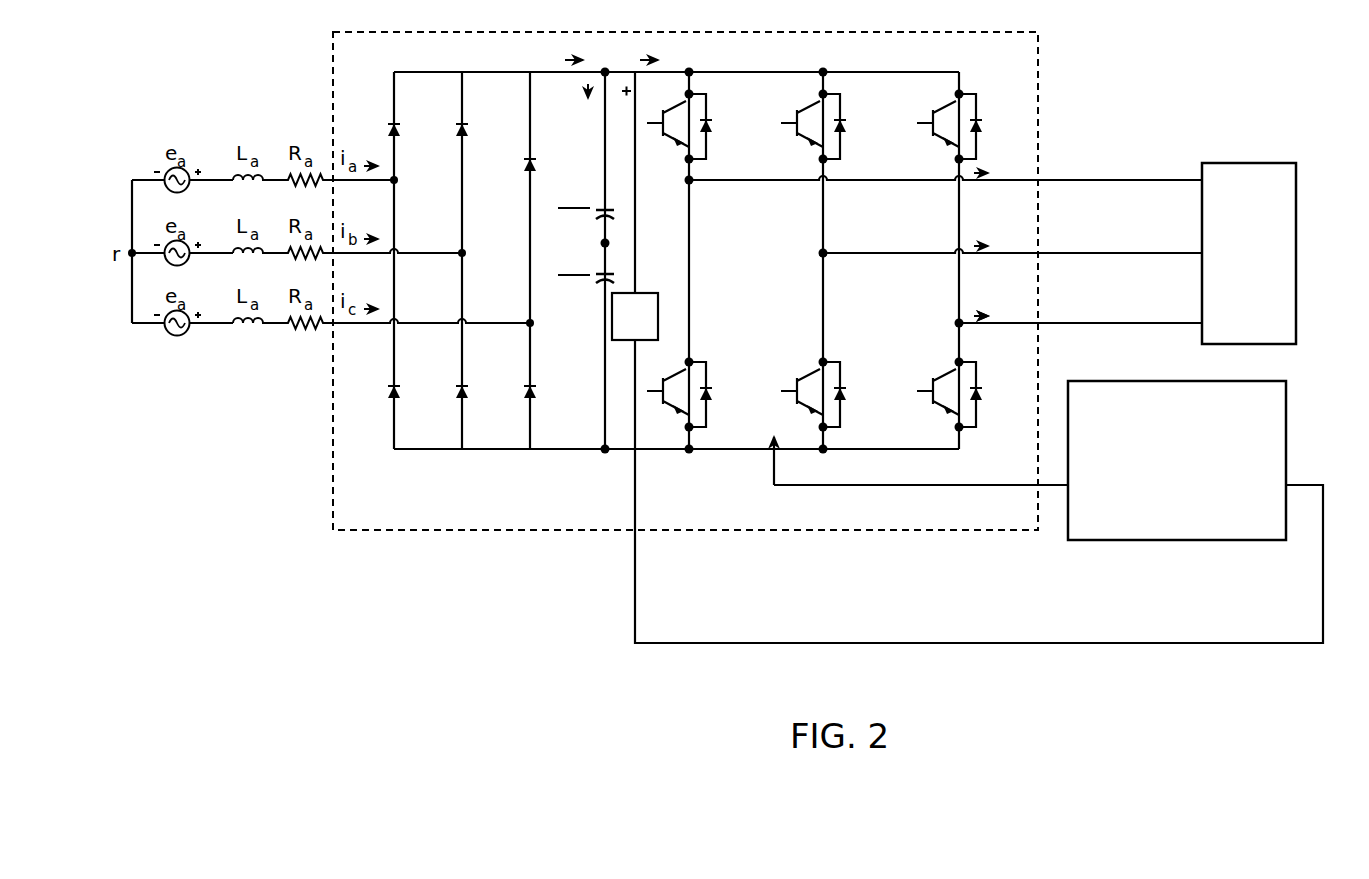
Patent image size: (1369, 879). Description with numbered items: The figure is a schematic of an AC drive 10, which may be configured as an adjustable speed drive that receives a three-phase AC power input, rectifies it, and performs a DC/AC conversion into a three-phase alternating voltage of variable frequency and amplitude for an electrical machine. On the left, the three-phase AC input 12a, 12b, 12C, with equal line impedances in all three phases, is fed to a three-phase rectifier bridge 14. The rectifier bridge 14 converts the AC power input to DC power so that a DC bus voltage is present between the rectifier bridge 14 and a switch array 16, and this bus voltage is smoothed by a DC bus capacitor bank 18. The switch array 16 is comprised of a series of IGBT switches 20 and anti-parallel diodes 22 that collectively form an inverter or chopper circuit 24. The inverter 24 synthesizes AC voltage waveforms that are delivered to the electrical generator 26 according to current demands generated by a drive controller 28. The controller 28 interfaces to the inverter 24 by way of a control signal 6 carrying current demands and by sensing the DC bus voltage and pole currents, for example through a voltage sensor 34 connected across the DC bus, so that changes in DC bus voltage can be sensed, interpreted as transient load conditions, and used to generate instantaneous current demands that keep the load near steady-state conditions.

The AC drive 10 is at (1040, 62).
The three-phase AC input 12a is at (168, 172).
The three-phase AC input 12b is at (186, 243).
The three-phase AC input 12C is at (177, 337).
The three-phase rectifier bridge 14 is at (412, 470).
The switch array 16 is at (923, 299).
The DC bus capacitor bank 18 is at (614, 279).
The IGBT switches 20 is at (922, 123).
The anti-parallel diodes 22 is at (979, 118).
The inverter 24 is at (759, 305).
The electrical generator 26 is at (1298, 187).
The drive controller 28 is at (1288, 402).
The voltage sensor 34 is at (659, 313).
The gate control signal 6 is at (775, 464).